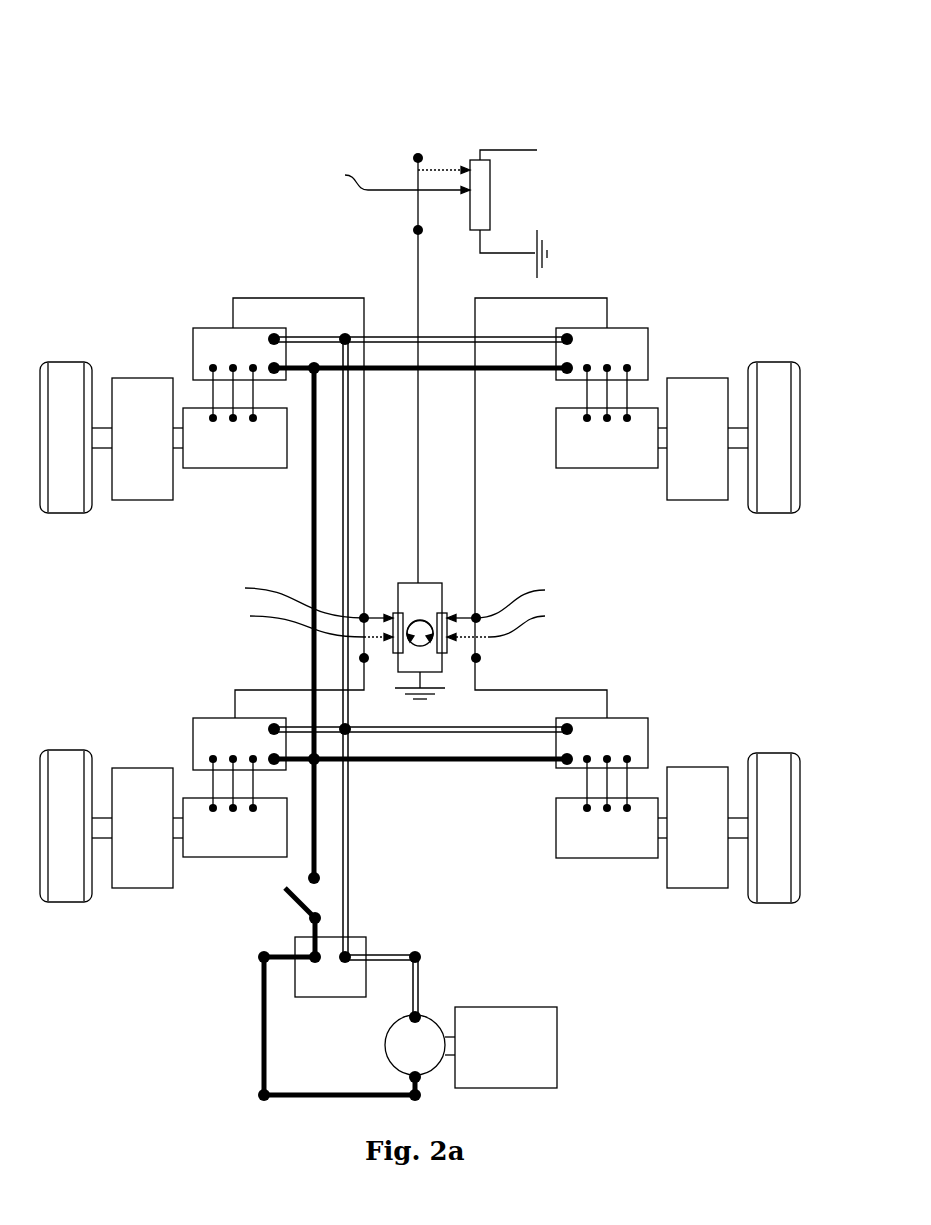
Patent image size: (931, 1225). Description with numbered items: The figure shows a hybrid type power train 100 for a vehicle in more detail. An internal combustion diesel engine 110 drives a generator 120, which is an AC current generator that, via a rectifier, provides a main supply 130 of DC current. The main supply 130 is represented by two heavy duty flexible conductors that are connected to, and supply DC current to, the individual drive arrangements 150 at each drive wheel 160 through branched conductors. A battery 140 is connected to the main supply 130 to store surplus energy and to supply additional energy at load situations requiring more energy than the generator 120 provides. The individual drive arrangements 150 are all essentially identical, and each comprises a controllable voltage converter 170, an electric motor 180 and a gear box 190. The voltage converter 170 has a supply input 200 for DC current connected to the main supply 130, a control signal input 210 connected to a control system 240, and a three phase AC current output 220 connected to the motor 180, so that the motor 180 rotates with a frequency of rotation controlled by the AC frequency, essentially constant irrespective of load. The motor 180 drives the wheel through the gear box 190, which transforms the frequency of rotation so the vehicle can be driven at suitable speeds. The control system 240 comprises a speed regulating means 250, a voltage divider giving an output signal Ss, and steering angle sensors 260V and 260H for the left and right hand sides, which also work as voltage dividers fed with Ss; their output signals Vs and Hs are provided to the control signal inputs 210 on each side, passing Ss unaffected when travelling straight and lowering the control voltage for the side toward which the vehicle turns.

The power train 100 is at (143, 190).
The internal combustion diesel engine 110 is at (501, 1047).
The generator 120 is at (415, 1043).
The main supply 130 is at (357, 857).
The battery 140 is at (330, 967).
The individual drive arrangement 150 is at (720, 695).
The drive wheel 160 is at (773, 904).
The controllable voltage converter 170 is at (602, 743).
The electric motor 180 is at (607, 828).
The gear box 190 is at (703, 827).
The supply input 200 is at (543, 768).
The control signal input 210 is at (607, 716).
The AC current output 220 is at (556, 796).
The control system 240 is at (517, 138).
The speed regulating means 250 is at (495, 195).
The steering angle sensor 260V is at (383, 595).
The steering angle sensor 260H is at (488, 587).